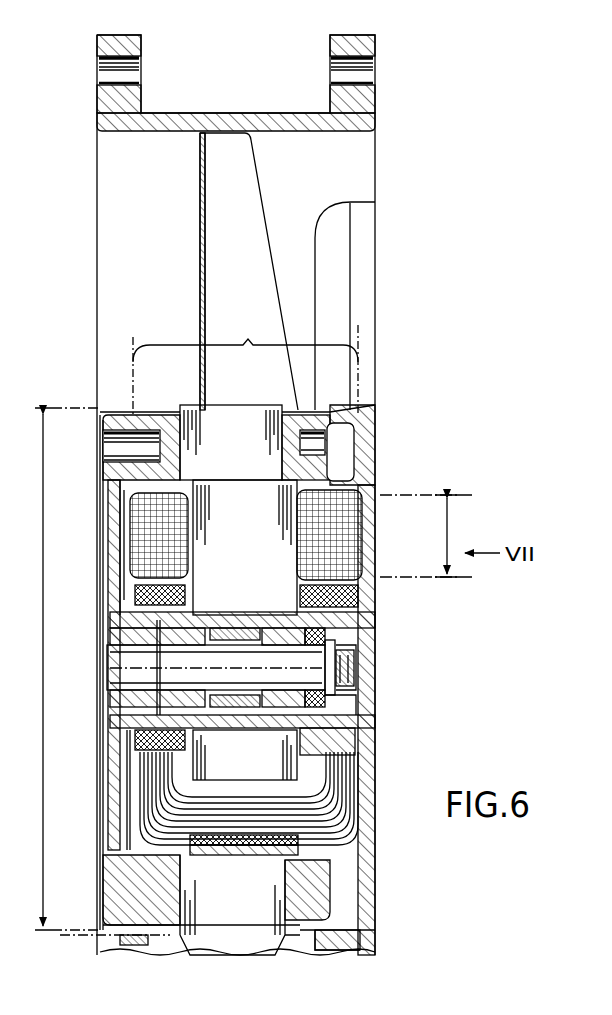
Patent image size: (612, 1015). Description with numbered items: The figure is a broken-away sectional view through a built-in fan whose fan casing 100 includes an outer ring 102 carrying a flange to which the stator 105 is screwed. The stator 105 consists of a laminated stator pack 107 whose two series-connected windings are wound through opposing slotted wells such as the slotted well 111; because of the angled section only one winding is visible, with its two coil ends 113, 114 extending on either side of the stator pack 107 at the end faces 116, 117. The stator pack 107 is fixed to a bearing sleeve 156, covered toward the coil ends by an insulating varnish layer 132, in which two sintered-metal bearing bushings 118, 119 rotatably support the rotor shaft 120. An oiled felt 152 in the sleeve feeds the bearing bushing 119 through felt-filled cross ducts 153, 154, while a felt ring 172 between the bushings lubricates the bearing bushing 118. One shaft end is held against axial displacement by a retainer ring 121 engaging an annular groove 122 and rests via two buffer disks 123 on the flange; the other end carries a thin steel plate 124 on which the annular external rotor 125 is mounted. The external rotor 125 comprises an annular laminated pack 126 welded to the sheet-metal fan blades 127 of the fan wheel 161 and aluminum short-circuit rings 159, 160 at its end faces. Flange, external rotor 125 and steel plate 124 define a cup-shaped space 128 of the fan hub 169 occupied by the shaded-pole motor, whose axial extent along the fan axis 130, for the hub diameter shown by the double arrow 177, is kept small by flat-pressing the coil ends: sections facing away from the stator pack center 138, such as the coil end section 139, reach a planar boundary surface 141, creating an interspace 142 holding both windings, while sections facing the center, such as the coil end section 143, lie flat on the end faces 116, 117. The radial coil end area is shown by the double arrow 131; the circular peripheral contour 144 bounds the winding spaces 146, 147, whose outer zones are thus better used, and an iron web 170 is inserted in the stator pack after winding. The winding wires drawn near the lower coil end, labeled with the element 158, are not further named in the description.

The fan casing 100 is at (378, 38).
The outer ring 102 is at (367, 112).
The stator 105 is at (350, 478).
The laminated stator pack 107 is at (252, 541).
The slotted well 111 is at (340, 858).
The coil end 113 is at (165, 492).
The coil end 114 is at (330, 498).
The end face 116 is at (355, 460).
The end face 117 is at (110, 480).
The bearing bushing 118 is at (360, 710).
The bearing bushing 119 is at (112, 712).
The rotor shaft 120 is at (301, 671).
The retainer ring 121 is at (355, 658).
The annular groove 122 is at (360, 680).
The buffer disks 123 is at (360, 695).
The steel plate 124 is at (116, 847).
The external rotor 125 is at (101, 415).
The annular laminated pack 126 is at (243, 451).
The sheet-metal fan blades 127 is at (243, 239).
The cup-shaped space 128 is at (96, 898).
The fan axis 130 is at (105, 668).
The double arrow 131 is at (452, 518).
The insulating varnish layer 132 is at (125, 590).
The center of the stator pack 138 is at (360, 727).
The coil end section 139 is at (112, 540).
The planar boundary surface 141 is at (358, 330).
The interspace 142 is at (250, 340).
The coil end section 143 is at (362, 585).
The circular peripheral contour 144 is at (360, 490).
The winding space 146 is at (360, 497).
The winding space 147 is at (110, 512).
The oiled felt 152 is at (115, 602).
The felt-filled cross duct 153 is at (115, 626).
The felt-filled cross duct 154 is at (130, 732).
The bearing sleeve 156 is at (360, 638).
The winding 158 is at (375, 812).
The short-circuit ring 159 is at (110, 465).
The short-circuit ring 160 is at (355, 412).
The fan wheel 161 is at (137, 272).
The fan hub 169 is at (98, 948).
The iron web 170 is at (345, 875).
The felt ring 172 is at (112, 698).
The double arrow 177 is at (45, 450).